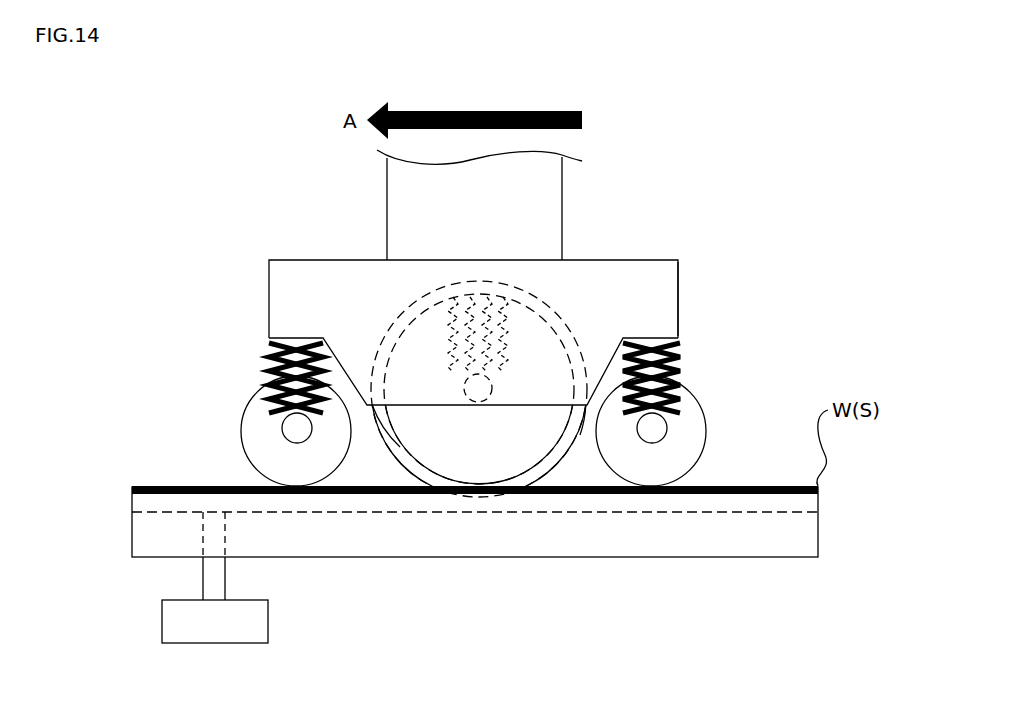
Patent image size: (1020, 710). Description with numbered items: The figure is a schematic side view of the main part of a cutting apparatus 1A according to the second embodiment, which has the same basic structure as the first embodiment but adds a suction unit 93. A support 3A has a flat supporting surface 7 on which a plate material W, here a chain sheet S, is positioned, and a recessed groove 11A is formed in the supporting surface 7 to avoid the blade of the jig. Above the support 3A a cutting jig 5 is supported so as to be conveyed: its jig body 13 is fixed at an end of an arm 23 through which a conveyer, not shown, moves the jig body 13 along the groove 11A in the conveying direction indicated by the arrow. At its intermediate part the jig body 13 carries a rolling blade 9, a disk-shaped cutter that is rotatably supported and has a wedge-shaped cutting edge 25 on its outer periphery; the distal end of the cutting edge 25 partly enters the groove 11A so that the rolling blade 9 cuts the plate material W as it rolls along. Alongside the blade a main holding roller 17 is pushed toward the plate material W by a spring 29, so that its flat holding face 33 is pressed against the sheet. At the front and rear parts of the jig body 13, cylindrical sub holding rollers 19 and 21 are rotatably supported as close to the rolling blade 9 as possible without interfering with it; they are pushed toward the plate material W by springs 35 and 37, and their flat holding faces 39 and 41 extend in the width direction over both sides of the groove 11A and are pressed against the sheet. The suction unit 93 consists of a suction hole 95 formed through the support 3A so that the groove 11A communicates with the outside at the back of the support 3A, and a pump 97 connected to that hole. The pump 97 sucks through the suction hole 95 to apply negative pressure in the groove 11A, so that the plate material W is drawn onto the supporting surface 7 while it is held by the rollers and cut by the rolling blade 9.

The cutting apparatus 1A is at (707, 168).
The support 3A is at (820, 543).
The cutting jig 5 is at (682, 291).
The supporting surface 7 is at (155, 492).
The rolling blade 9 is at (557, 457).
The groove 11A is at (778, 510).
The jig body 13 is at (605, 282).
The main holding roller 17 is at (400, 447).
The sub holding roller 19 is at (252, 440).
The sub holding roller 21 is at (693, 418).
The arm 23 is at (542, 190).
The cutting edge 25 is at (580, 435).
The spring 29 is at (478, 287).
The holding face 33 is at (482, 483).
The spring 35 is at (268, 360).
The spring 37 is at (680, 362).
The holding face 39 is at (300, 487).
The holding face 41 is at (653, 482).
The suction unit 93 is at (169, 577).
The suction hole 95 is at (206, 548).
The pump 97 is at (170, 625).